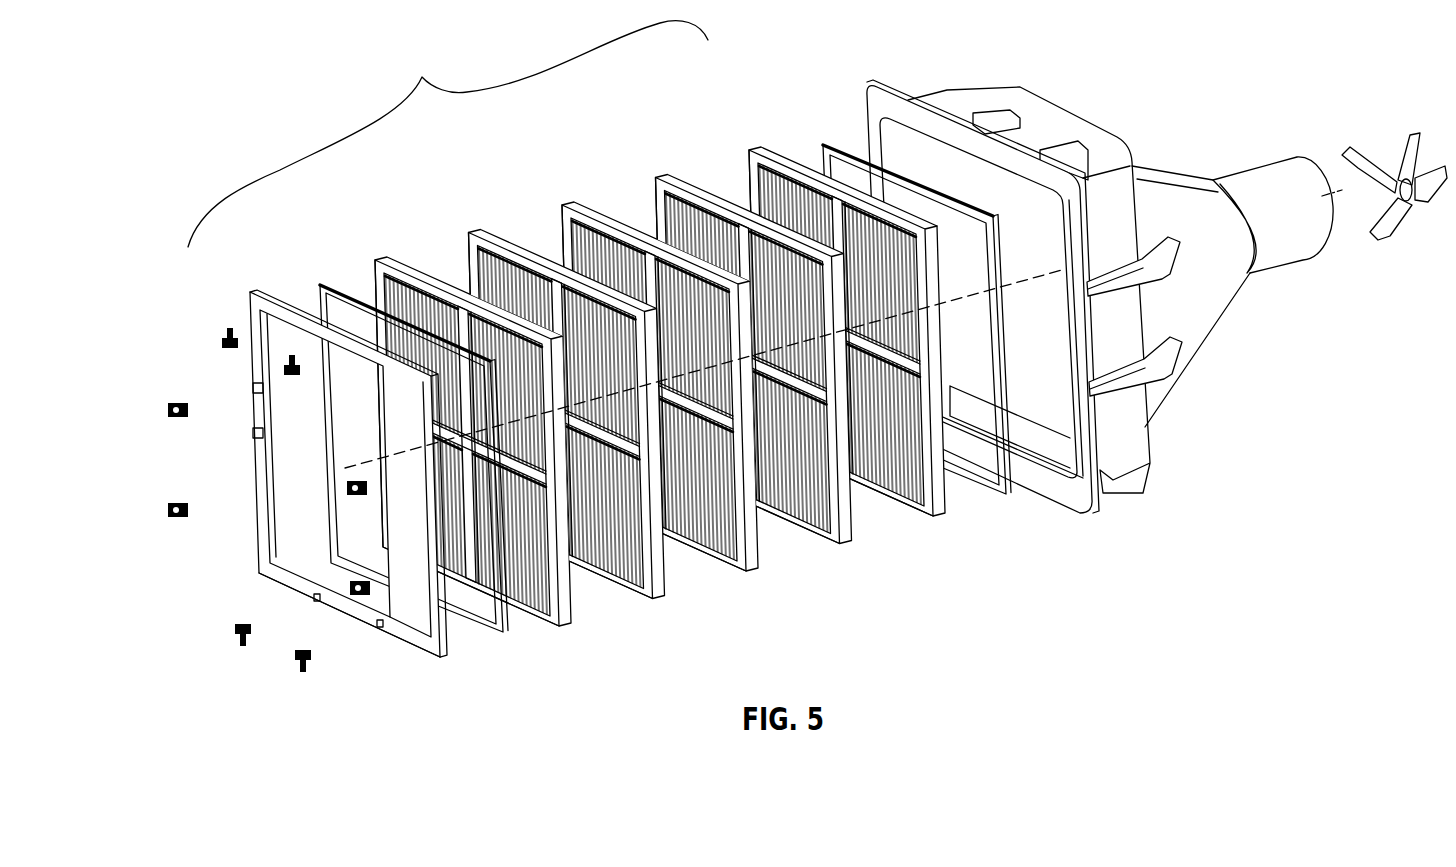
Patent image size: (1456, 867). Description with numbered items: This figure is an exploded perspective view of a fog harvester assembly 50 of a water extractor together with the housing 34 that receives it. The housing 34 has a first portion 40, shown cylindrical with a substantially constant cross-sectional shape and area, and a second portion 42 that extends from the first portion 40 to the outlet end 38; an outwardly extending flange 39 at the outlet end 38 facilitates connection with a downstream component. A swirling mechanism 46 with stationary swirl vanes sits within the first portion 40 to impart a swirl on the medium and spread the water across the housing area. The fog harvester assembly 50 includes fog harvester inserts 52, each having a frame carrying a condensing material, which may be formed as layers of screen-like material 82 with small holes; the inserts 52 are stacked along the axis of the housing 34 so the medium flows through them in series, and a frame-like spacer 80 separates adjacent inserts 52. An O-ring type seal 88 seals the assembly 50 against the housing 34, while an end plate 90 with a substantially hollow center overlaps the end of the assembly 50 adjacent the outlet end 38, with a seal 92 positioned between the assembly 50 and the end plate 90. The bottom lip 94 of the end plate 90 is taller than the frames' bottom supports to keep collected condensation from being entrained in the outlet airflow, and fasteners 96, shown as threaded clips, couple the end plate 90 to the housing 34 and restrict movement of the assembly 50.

The fog harvester assembly 50 is at (448, 134).
The fog harvester insert 52 is at (377, 254).
The spacer 80 is at (659, 178).
The screen-like material 82 is at (477, 233).
The O-ring type seal 88 is at (847, 152).
The end plate 90 is at (253, 447).
The seal 92 is at (492, 633).
The bottom lip 94 is at (287, 582).
The fasteners 96 is at (167, 407).
The outwardly extending flange 39 is at (915, 110).
The second portion 42 is at (1064, 120).
The housing 34 is at (1176, 164).
The first portion 40 is at (1253, 164).
The swirling mechanism 46 is at (1398, 213).
The outlet end 38 is at (1057, 470).